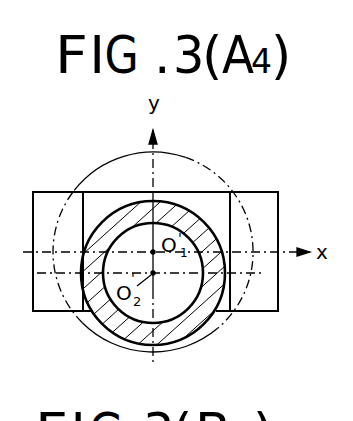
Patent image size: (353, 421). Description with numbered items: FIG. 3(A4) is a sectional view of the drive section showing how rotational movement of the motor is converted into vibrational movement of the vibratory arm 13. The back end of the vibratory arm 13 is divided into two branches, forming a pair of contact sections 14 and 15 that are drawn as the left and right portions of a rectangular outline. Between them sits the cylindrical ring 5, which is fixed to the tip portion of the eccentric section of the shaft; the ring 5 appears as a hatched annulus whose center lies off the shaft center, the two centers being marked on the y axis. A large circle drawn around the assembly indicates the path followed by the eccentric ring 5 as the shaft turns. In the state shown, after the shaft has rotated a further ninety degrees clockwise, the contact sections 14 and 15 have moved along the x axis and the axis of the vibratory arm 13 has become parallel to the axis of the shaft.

The cylindrical ring 5 is at (188, 337).
The vibratory arm 13 is at (207, 187).
The contact section 14 is at (33, 311).
The contact section 15 is at (270, 298).